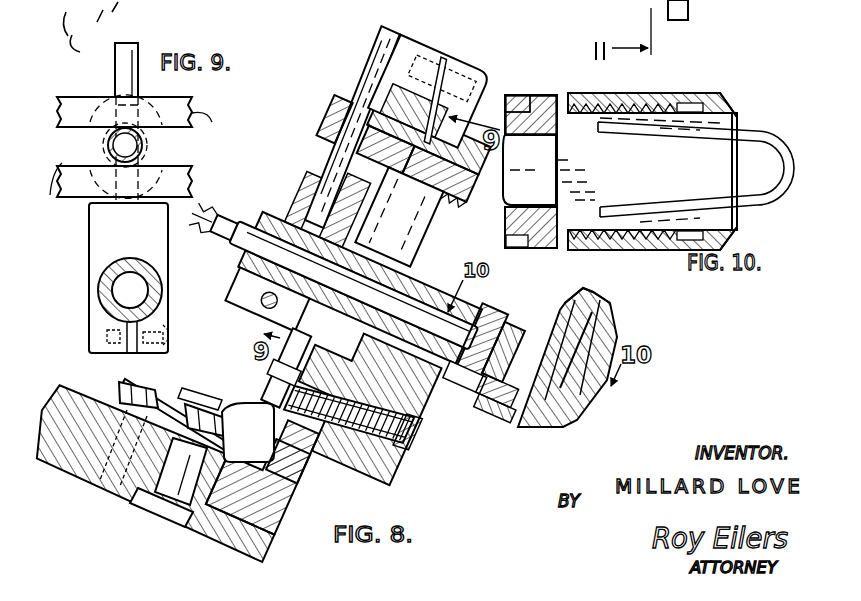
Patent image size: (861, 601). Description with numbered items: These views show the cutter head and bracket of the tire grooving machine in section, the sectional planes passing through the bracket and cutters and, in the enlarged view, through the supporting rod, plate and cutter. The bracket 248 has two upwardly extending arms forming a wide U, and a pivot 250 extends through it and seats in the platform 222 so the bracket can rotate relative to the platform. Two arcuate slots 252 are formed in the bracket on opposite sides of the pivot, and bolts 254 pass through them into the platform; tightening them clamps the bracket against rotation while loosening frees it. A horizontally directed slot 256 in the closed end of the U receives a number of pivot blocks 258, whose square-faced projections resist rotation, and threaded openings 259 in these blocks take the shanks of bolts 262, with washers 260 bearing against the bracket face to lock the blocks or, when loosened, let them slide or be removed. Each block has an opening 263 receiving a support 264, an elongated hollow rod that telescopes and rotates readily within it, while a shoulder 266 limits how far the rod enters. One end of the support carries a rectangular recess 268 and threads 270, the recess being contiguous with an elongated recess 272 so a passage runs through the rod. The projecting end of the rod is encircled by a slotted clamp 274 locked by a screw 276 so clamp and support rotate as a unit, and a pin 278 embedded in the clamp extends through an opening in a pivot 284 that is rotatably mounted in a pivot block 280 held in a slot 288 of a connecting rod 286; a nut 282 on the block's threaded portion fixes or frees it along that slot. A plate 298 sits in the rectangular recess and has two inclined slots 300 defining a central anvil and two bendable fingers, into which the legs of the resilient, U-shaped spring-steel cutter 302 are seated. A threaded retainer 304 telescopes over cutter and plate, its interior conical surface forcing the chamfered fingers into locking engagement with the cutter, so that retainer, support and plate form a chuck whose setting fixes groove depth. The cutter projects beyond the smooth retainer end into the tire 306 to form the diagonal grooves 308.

In FIG. 8, the platform 222 is at (262, 549).
In FIG. 8, the bracket 248 is at (283, 495).
In FIG. 8, the pivot 250 is at (163, 517).
In FIG. 8, the arcuate slots 252 is at (108, 403).
In FIG. 8, the bolts 254 is at (163, 393).
In FIG. 8, the horizontally directed slot 256 is at (308, 457).
In FIG. 10, the pivot blocks 258 is at (513, 96).
In FIG. 8, the pivot blocks 258 is at (408, 278).
In FIG. 8, the threaded openings 259 is at (403, 447).
In FIG. 8, the washers 260 is at (248, 432).
In FIG. 8, the bolts 262 is at (268, 392).
In FIG. 8, the opening 263 is at (417, 402).
In FIG. 9, the support 264 is at (102, 280).
In FIG. 10, the support 264 is at (505, 222).
In FIG. 8, the support 264 is at (267, 214).
In FIG. 10, the shoulder 266 is at (546, 100).
In FIG. 8, the shoulder 266 is at (481, 306).
In FIG. 8, the recess 268 is at (506, 330).
In FIG. 10, the threads 270 is at (609, 248).
In FIG. 8, the threads 270 is at (487, 388).
In FIG. 9, the elongated recess 272 is at (123, 296).
In FIG. 10, the elongated recess 272 is at (534, 174).
In FIG. 8, the elongated recess 272 is at (243, 220).
In FIG. 9, the slotted clamp 274 is at (97, 236).
In FIG. 8, the slotted clamp 274 is at (237, 300).
In FIG. 9, the screw 276 is at (133, 353).
In FIG. 8, the screw 276 is at (263, 307).
In FIG. 9, the pin 278 is at (133, 60).
In FIG. 8, the pin 278 is at (368, 70).
In FIG. 9, the pivot block 280 is at (163, 146).
In FIG. 8, the pivot block 280 is at (466, 186).
In FIG. 8, the nut 282 is at (430, 212).
In FIG. 9, the pivot 284 is at (112, 142).
In FIG. 8, the pivot 284 is at (327, 107).
In FIG. 9, the connecting rod 286 is at (192, 117).
In FIG. 8, the connecting rod 286 is at (443, 62).
In FIG. 9, the slot 288 is at (52, 185).
In FIG. 8, the slot 288 is at (366, 158).
In FIG. 10, the plate 298 is at (624, 178).
In FIG. 8, the plate 298 is at (456, 373).
In FIG. 10, the slots 300 is at (660, 210).
In FIG. 10, the cutter 302 is at (782, 152).
In FIG. 8, the cutter 302 is at (566, 390).
In FIG. 10, the threaded retainer 304 is at (722, 94).
In FIG. 8, the threaded retainer 304 is at (503, 408).
In FIG. 8, the tire 306 is at (613, 323).
In FIG. 8, the diagonal grooves 308 is at (597, 302).